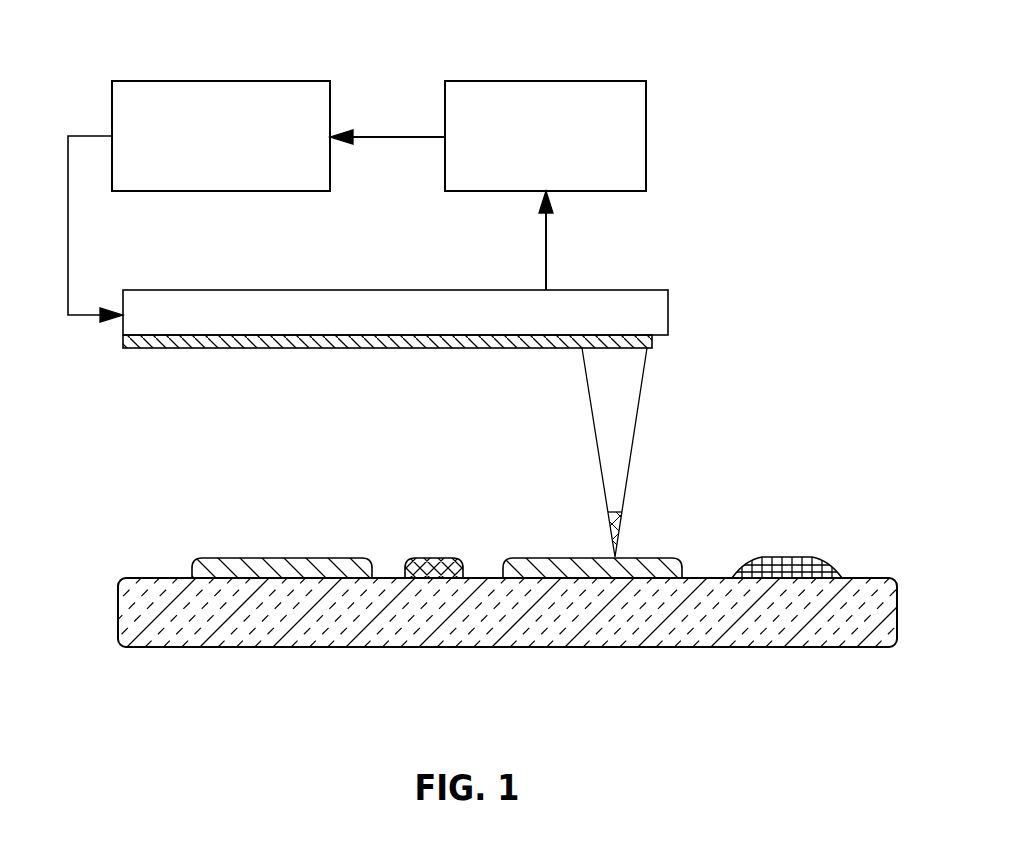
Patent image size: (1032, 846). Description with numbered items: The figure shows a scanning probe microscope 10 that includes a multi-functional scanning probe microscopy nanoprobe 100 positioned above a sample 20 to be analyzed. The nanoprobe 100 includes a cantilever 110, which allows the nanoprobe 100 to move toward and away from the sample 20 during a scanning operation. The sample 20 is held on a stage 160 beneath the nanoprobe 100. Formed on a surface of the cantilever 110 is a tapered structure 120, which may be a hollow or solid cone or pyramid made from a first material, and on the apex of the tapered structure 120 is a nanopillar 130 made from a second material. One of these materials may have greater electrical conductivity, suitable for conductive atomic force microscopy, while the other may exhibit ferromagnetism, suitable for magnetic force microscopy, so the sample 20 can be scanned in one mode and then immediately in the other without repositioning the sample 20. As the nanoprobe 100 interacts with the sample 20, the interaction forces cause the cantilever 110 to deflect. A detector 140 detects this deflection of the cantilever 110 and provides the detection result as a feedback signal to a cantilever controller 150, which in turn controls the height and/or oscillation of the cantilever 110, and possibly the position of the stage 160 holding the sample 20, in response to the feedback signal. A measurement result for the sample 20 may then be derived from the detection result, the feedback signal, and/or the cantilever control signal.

The scanning probe microscope 10 is at (755, 129).
The sample 20 is at (826, 531).
The multi-functional scanning probe microscopy nanoprobe 100 is at (502, 425).
The cantilever 110 is at (637, 312).
The tapered structure 120 is at (625, 376).
The nanopillar 130 is at (617, 522).
The detector 140 is at (524, 81).
The cantilever controller 150 is at (207, 81).
The stage 160 is at (118, 610).